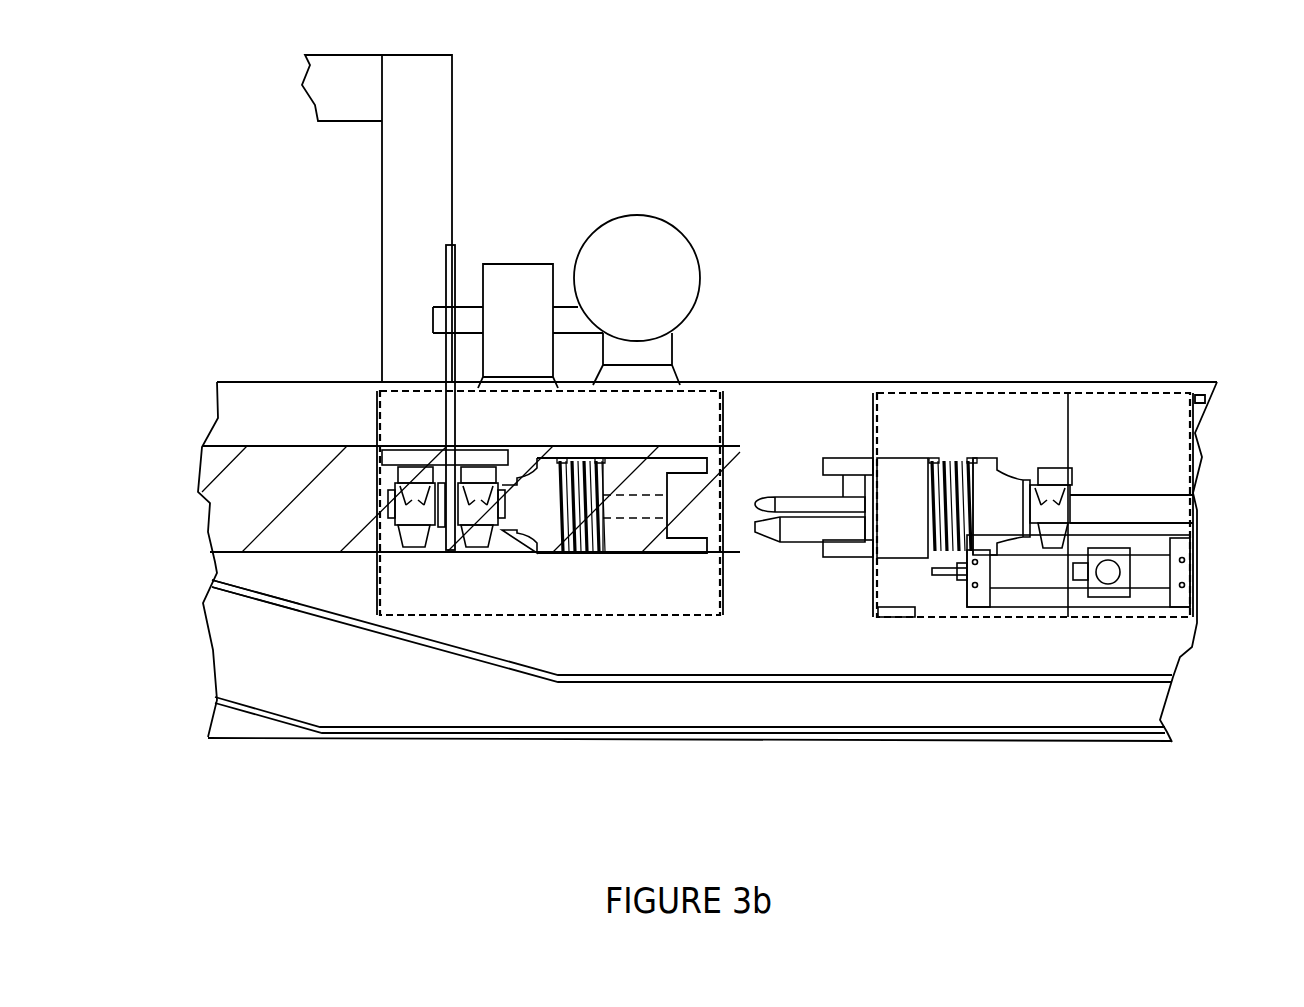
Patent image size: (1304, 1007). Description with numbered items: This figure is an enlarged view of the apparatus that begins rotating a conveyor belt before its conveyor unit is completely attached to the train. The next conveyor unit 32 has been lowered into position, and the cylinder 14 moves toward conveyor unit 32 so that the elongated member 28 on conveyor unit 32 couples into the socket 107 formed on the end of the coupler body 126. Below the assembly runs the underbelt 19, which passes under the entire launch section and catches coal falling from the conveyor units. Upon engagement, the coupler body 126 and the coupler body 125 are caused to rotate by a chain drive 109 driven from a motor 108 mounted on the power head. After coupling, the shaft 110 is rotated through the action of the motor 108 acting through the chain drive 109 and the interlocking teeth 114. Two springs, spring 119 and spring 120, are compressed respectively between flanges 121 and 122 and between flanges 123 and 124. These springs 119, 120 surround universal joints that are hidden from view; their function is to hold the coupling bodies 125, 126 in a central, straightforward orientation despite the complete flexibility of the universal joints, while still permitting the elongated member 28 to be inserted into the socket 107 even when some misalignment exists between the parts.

The cylinder 14 is at (247, 557).
The underbelt 19 is at (985, 683).
The elongated member 28 is at (843, 503).
The conveyor unit 32 is at (1047, 617).
The socket 107 is at (641, 535).
The motor 108 is at (627, 215).
The chain drive 109 is at (443, 265).
The shaft 110 is at (1163, 493).
The interlocking teeth 114 is at (837, 463).
The spring 119 is at (987, 458).
The spring 120 is at (580, 462).
The flange 121 is at (1033, 470).
The flange 122 is at (953, 457).
The flange 123 is at (550, 558).
The flange 124 is at (606, 558).
The coupler body 125 is at (932, 458).
The coupler body 126 is at (605, 485).